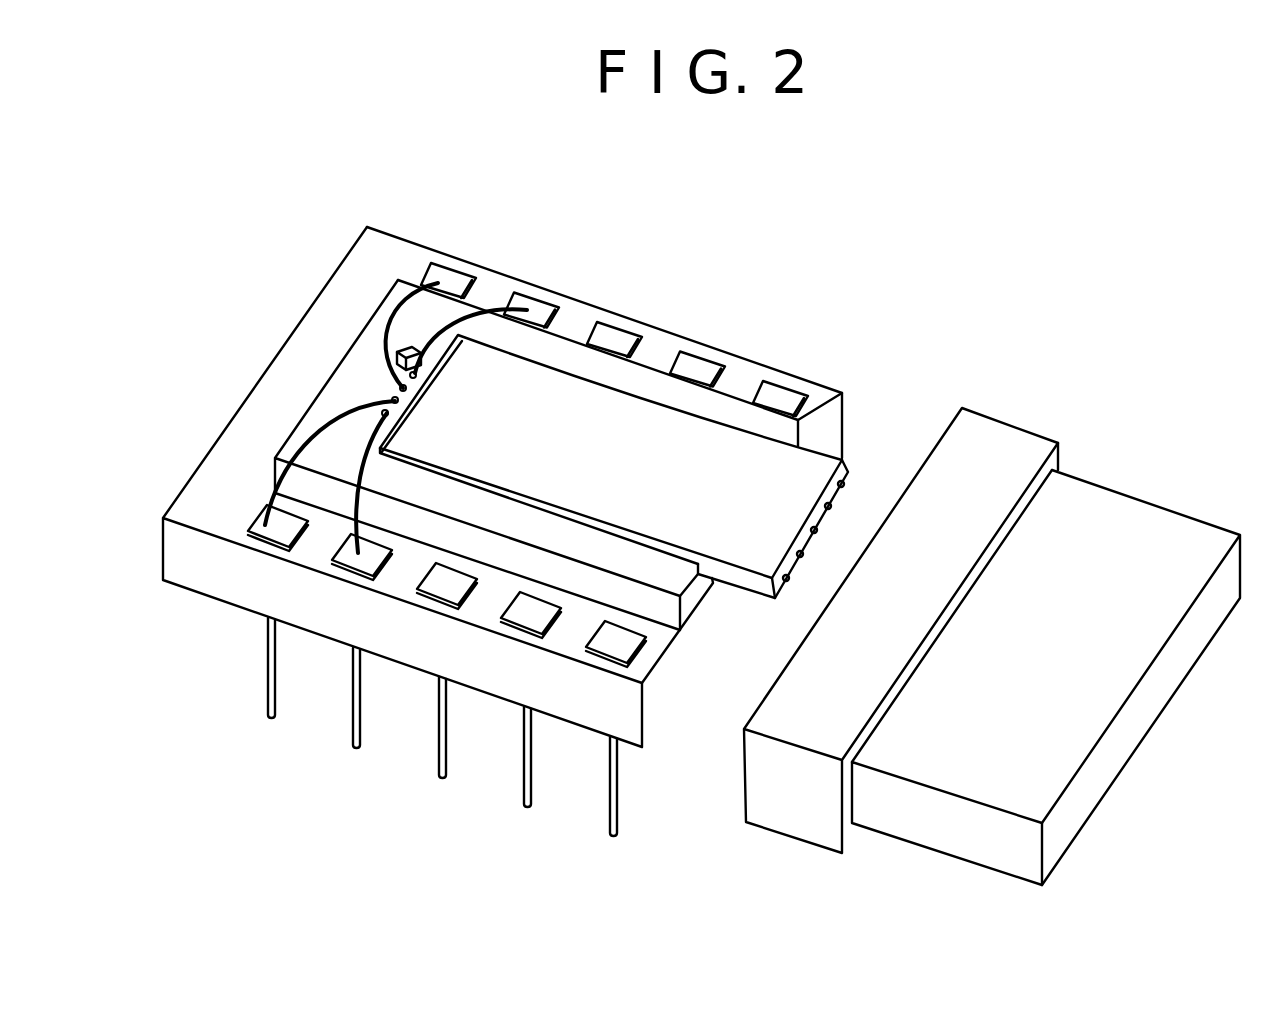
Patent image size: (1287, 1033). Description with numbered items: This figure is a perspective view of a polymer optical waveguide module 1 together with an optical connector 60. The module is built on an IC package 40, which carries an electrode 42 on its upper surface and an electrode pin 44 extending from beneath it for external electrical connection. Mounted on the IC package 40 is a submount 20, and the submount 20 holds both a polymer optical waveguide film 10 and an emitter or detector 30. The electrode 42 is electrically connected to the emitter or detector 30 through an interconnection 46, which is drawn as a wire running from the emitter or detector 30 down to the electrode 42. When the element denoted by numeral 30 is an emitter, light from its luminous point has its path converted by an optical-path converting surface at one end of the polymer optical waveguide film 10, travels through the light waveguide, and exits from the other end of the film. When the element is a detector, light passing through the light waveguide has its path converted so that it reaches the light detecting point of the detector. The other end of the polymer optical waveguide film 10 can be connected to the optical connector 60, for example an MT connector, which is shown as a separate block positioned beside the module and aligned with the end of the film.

The polymer optical waveguide module 1 is at (660, 290).
The polymer optical waveguide film 10 is at (803, 478).
The submount 20 is at (662, 580).
The emitter or detector 30 is at (396, 385).
The IC package 40 is at (212, 513).
The electrode 42 is at (266, 523).
The electrode pin 44 is at (280, 700).
The interconnection 46 is at (323, 428).
The optical connector 60 is at (1137, 470).